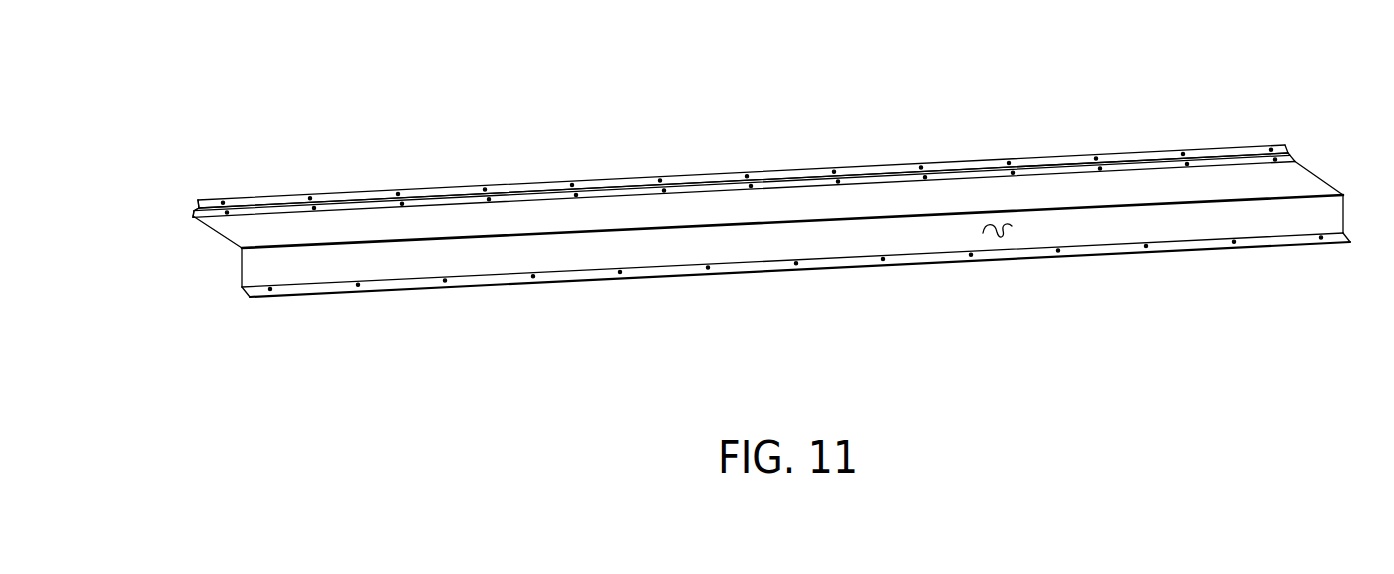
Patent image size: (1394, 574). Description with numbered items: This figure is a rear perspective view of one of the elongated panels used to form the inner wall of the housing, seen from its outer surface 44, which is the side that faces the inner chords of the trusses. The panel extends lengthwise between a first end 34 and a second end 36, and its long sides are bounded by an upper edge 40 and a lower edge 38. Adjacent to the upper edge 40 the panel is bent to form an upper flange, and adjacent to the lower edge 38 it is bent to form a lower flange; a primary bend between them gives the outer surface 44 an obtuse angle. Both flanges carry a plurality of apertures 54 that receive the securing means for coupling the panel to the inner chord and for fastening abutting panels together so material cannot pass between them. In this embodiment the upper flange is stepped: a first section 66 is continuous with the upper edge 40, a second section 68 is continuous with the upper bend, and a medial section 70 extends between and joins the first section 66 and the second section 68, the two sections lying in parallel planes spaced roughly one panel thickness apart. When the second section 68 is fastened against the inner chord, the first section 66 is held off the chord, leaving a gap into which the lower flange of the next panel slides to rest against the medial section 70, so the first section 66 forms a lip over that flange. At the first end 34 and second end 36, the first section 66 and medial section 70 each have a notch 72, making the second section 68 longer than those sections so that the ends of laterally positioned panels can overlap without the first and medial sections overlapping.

The first end 34 is at (1317, 173).
The second end 36 is at (243, 268).
The lower edge 38 is at (757, 275).
The upper edge 40 is at (873, 165).
The outer surface 44 is at (998, 237).
The apertures 54 is at (363, 287).
The first section 66 is at (252, 198).
The second section 68 is at (195, 218).
The medial section 70 is at (1197, 158).
The notch 72 is at (180, 190).